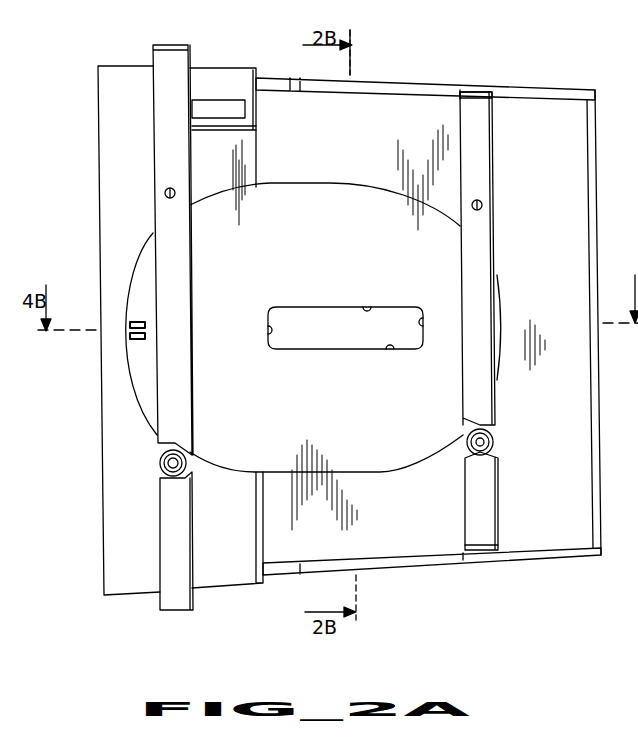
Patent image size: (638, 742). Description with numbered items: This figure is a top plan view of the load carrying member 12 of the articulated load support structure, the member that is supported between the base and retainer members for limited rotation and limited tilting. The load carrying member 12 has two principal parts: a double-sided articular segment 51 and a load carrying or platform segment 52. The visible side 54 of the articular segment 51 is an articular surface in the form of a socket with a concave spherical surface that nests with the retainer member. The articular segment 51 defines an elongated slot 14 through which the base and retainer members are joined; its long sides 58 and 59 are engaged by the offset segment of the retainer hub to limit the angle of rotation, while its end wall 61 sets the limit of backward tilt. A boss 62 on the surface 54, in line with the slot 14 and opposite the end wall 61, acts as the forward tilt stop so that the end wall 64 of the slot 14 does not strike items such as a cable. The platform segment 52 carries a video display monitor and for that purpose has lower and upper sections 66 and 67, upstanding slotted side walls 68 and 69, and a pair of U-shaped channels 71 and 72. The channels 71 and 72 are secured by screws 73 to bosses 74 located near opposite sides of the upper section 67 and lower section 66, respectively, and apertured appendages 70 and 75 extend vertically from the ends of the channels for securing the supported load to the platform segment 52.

The load carrying member 12 is at (538, 86).
The elongated slot 14 is at (344, 334).
The double-sided articular segment 51 is at (330, 183).
The load carrying segment 52 is at (575, 143).
The other side 54 is at (322, 234).
The long side 58 is at (368, 300).
The long side 59 is at (393, 355).
The end wall 61 is at (425, 322).
The boss 62 is at (136, 341).
The end wall 64 is at (268, 330).
The lower section 66 is at (146, 551).
The upper section 67 is at (556, 493).
The upstanding slotted side wall 68 is at (420, 568).
The upstanding slotted side wall 69 is at (383, 80).
The apertured appendage 70 is at (478, 102).
The U-shaped channel 71 is at (493, 165).
The U-shaped channel 72 is at (180, 160).
The screw 73 is at (165, 193).
The boss 74 is at (190, 468).
The apertured appendage 75 is at (485, 545).